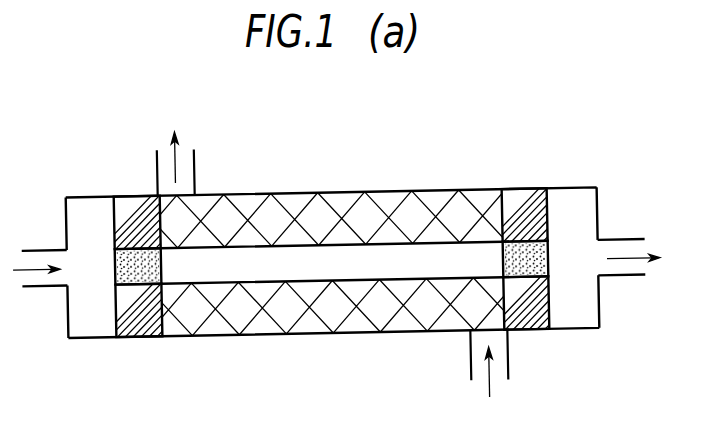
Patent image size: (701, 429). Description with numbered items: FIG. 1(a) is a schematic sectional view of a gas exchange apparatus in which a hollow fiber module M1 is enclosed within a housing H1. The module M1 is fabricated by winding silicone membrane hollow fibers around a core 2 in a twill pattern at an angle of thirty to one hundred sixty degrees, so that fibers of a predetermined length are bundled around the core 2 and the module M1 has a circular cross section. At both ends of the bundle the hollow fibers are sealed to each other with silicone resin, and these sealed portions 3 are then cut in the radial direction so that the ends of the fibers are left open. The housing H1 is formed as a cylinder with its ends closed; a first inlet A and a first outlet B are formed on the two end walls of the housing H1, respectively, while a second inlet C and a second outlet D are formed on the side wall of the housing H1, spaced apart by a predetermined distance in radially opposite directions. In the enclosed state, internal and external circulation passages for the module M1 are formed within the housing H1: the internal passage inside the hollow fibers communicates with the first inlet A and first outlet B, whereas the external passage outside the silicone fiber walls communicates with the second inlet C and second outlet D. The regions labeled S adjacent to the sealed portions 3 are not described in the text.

The core 2 is at (373, 243).
The sealed portions 3 is at (522, 189).
The porous support S is at (118, 268).
The hollow fiber module M1 is at (335, 257).
The housing H1 is at (290, 334).
The first inlet A is at (43, 249).
The first outlet B is at (623, 239).
The second inlet C is at (468, 358).
The second outlet D is at (198, 178).